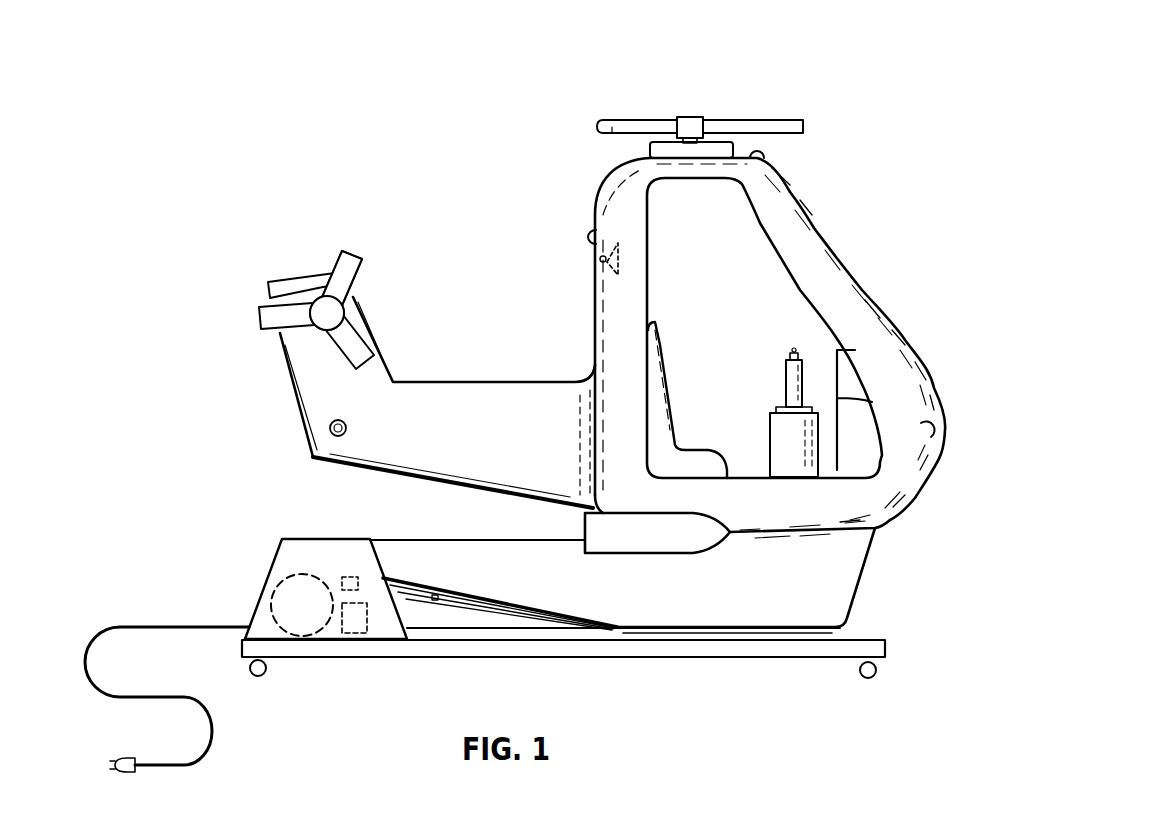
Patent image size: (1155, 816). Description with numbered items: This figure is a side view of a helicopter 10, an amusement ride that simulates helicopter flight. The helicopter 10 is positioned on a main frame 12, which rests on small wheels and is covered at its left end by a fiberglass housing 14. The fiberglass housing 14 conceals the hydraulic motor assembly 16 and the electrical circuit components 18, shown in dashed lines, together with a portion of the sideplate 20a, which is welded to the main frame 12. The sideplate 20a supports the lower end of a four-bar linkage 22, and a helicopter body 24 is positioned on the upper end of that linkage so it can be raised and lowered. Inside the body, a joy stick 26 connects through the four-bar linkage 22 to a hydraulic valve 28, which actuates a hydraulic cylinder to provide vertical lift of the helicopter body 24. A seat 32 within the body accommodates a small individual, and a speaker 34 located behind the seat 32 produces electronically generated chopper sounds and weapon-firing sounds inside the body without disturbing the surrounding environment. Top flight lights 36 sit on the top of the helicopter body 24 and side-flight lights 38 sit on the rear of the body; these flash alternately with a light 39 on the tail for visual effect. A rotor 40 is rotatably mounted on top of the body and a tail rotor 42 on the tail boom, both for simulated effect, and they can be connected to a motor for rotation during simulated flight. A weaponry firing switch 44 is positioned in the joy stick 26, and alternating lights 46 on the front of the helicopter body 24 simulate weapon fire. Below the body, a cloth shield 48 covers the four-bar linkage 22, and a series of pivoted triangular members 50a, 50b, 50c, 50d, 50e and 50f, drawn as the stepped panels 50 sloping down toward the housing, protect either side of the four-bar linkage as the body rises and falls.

The helicopter 10 is at (1072, 68).
The main frame 12 is at (718, 659).
The fiberglass housing 14 is at (270, 565).
The hydraulic motor assembly 16 is at (270, 597).
The electrical circuit components 18 is at (368, 611).
The sideplate 20a is at (420, 565).
The four-bar linkage 22 is at (477, 568).
The helicopter body 24 is at (488, 441).
The joy stick 26 is at (778, 368).
The hydraulic valve 28 is at (345, 574).
The seat 32 is at (667, 385).
The speaker 34 is at (606, 272).
The top flight lights 36 is at (768, 157).
The side-flight lights 38 is at (586, 232).
The light 39 is at (330, 428).
The rotor 40 is at (803, 126).
The tail rotor 42 is at (360, 254).
The weaponry firing switch 44 is at (797, 352).
The alternating lights 46 is at (928, 433).
The cloth shield 48 is at (862, 573).
The lower body 50 is at (683, 599).
The triangular member 50a is at (448, 604).
The triangular member 50b is at (487, 601).
The triangular member 50c is at (510, 606).
The triangular member 50d is at (430, 598).
The triangular member 50e is at (438, 600).
The triangular member 50f is at (556, 617).